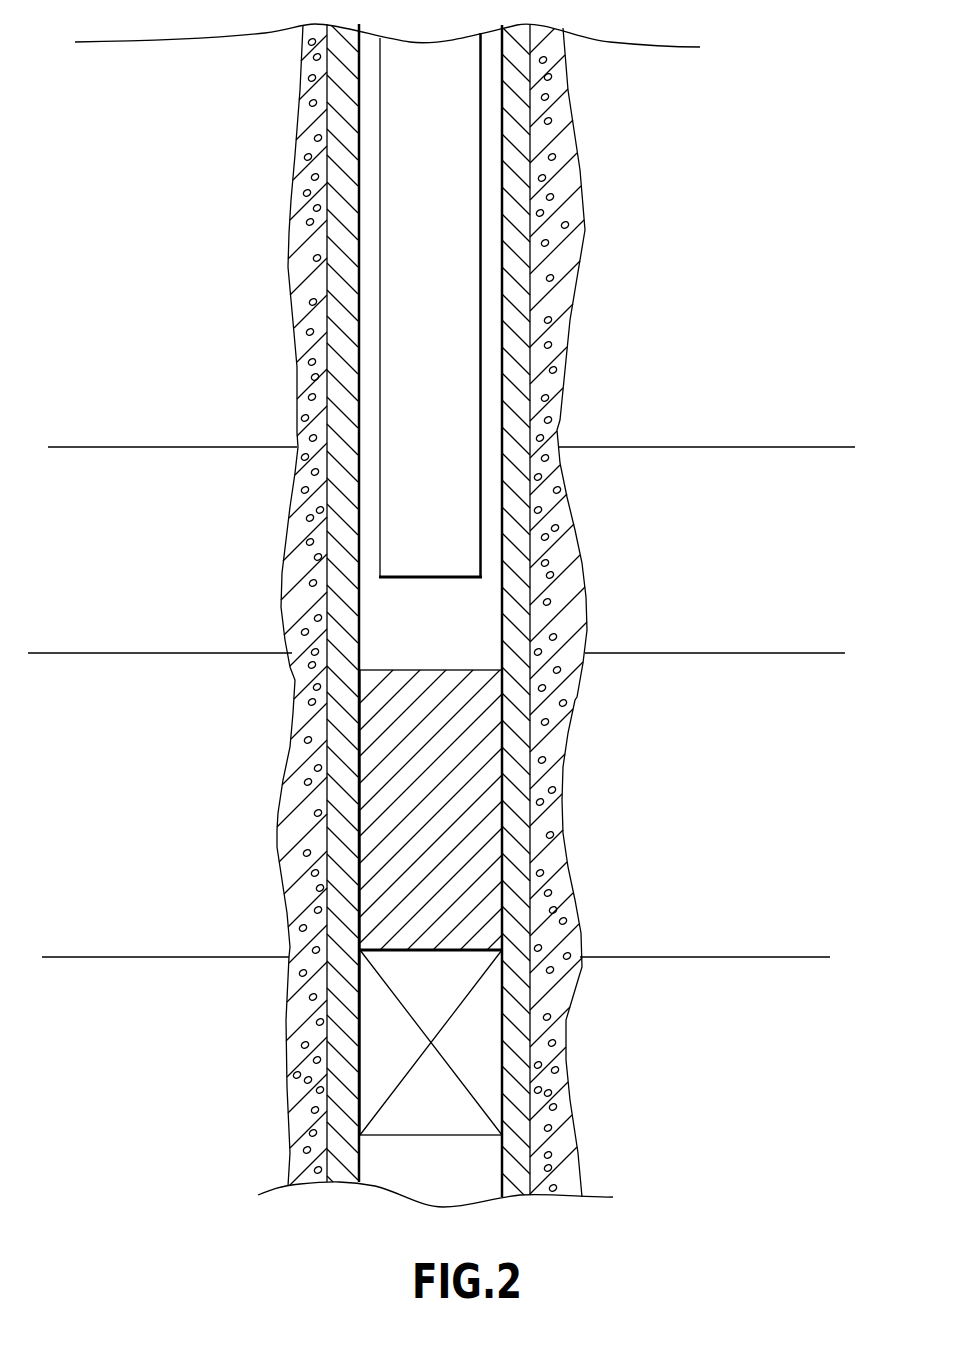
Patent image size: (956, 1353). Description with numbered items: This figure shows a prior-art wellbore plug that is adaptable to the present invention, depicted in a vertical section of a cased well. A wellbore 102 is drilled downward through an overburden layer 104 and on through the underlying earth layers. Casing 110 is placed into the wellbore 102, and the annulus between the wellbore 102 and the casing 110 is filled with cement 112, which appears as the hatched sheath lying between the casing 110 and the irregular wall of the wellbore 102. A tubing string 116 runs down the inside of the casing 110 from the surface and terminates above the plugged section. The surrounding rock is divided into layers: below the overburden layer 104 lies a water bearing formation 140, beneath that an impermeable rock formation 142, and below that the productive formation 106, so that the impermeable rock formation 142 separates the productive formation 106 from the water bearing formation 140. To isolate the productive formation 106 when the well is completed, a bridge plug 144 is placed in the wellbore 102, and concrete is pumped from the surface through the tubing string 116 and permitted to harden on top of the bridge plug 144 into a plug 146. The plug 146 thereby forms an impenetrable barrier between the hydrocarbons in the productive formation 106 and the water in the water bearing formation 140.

The wellbore 102 is at (293, 355).
The overburden layer 104 is at (96, 272).
The productive formation 106 is at (126, 1083).
The casing 110 is at (522, 142).
The cement 112 is at (553, 298).
The tubing string 116 is at (443, 513).
The water bearing formation 140 is at (134, 582).
The impermeable rock formation 142 is at (141, 817).
The bridge plug 144 is at (480, 1052).
The plug 146 is at (450, 840).